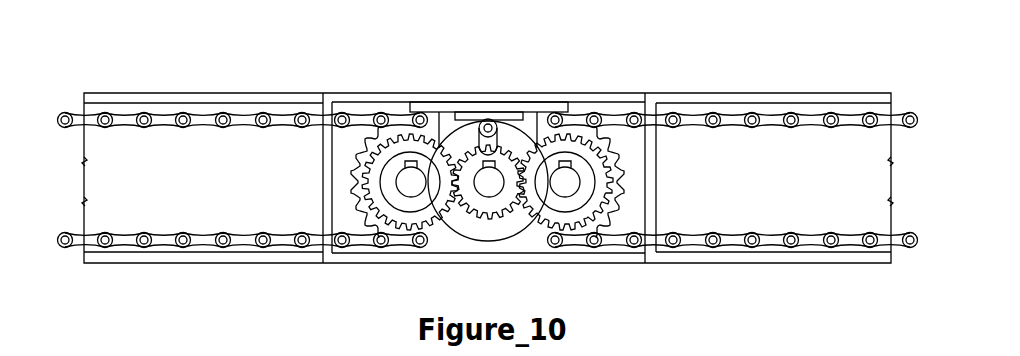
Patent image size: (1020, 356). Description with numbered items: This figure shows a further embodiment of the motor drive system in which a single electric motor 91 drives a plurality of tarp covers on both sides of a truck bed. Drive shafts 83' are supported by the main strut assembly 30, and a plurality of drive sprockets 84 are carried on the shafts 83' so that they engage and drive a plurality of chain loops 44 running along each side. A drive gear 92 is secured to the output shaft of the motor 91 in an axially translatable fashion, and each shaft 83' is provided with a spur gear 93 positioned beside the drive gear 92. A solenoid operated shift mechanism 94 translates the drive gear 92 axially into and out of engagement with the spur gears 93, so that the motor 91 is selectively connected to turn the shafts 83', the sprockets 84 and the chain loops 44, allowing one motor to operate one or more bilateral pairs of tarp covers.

The main strut assembly 30 is at (541, 100).
The chain loops 44 is at (793, 252).
The drive shafts 83' is at (513, 102).
The drive sprockets 84 is at (625, 182).
The electric motor 91 is at (502, 247).
The drive gear 92 is at (478, 217).
The spur gear 93 is at (600, 213).
The solenoid operated shift mechanism 94 is at (484, 126).